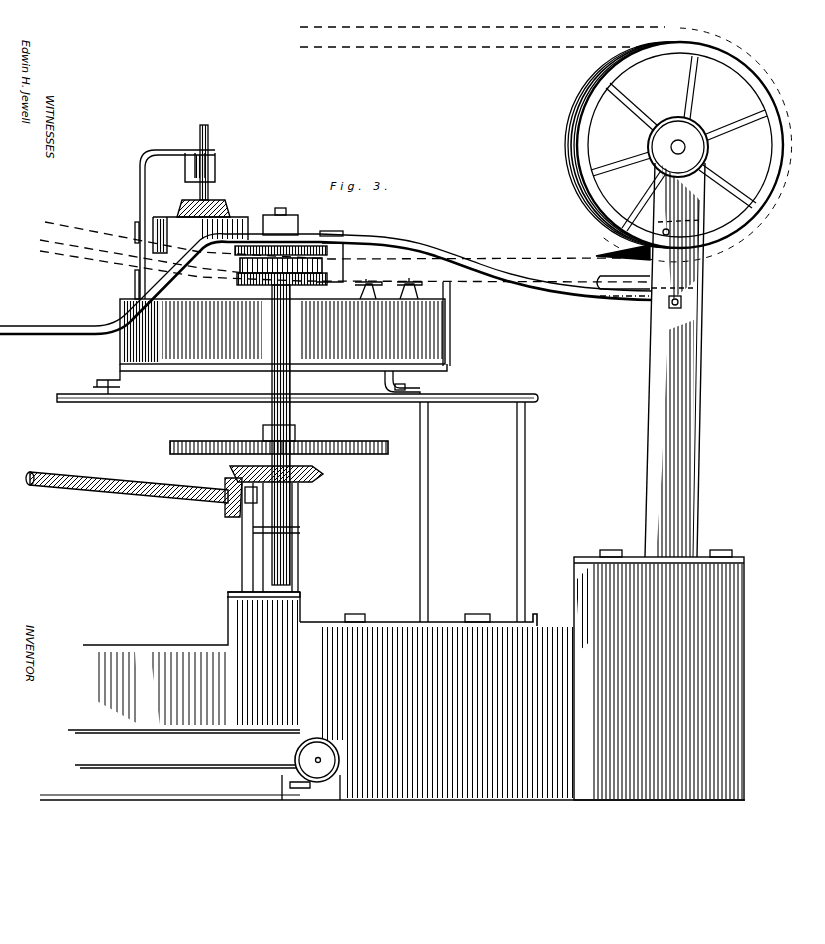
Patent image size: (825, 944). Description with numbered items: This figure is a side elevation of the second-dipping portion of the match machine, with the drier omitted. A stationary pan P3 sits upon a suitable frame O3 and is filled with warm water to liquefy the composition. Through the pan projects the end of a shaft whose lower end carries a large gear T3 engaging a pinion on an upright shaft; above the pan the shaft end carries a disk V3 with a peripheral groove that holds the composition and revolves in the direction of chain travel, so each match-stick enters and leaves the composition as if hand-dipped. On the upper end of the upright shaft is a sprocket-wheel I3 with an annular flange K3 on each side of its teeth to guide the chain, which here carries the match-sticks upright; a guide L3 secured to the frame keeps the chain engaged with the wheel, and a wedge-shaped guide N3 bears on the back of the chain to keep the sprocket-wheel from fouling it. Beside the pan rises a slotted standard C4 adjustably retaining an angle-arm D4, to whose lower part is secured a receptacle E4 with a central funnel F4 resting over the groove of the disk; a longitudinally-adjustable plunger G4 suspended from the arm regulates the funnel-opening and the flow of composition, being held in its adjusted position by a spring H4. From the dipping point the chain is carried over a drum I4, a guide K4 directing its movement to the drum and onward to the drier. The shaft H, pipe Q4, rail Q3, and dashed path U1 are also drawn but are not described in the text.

The drum I4 is at (578, 190).
The guide K4 is at (623, 271).
The frame O3 is at (297, 405).
The shaft H is at (269, 435).
The stationary pan P3 is at (285, 326).
The large gear T3 is at (279, 447).
The disk V3 is at (280, 491).
The annular flange K3 is at (305, 245).
The sprocket-wheel I3 is at (290, 218).
The guide L3 is at (280, 221).
The wedge-shaped guide N3 is at (343, 268).
The pipe Q4 is at (160, 294).
The rail Q3 is at (486, 264).
The dashed path U1 is at (345, 252).
The angle-arm D4 is at (177, 224).
The spring H4 is at (213, 168).
The plunger G4 is at (209, 193).
The funnel F4 is at (197, 201).
The receptacle E4 is at (200, 235).
The slotted standard C4 is at (128, 255).